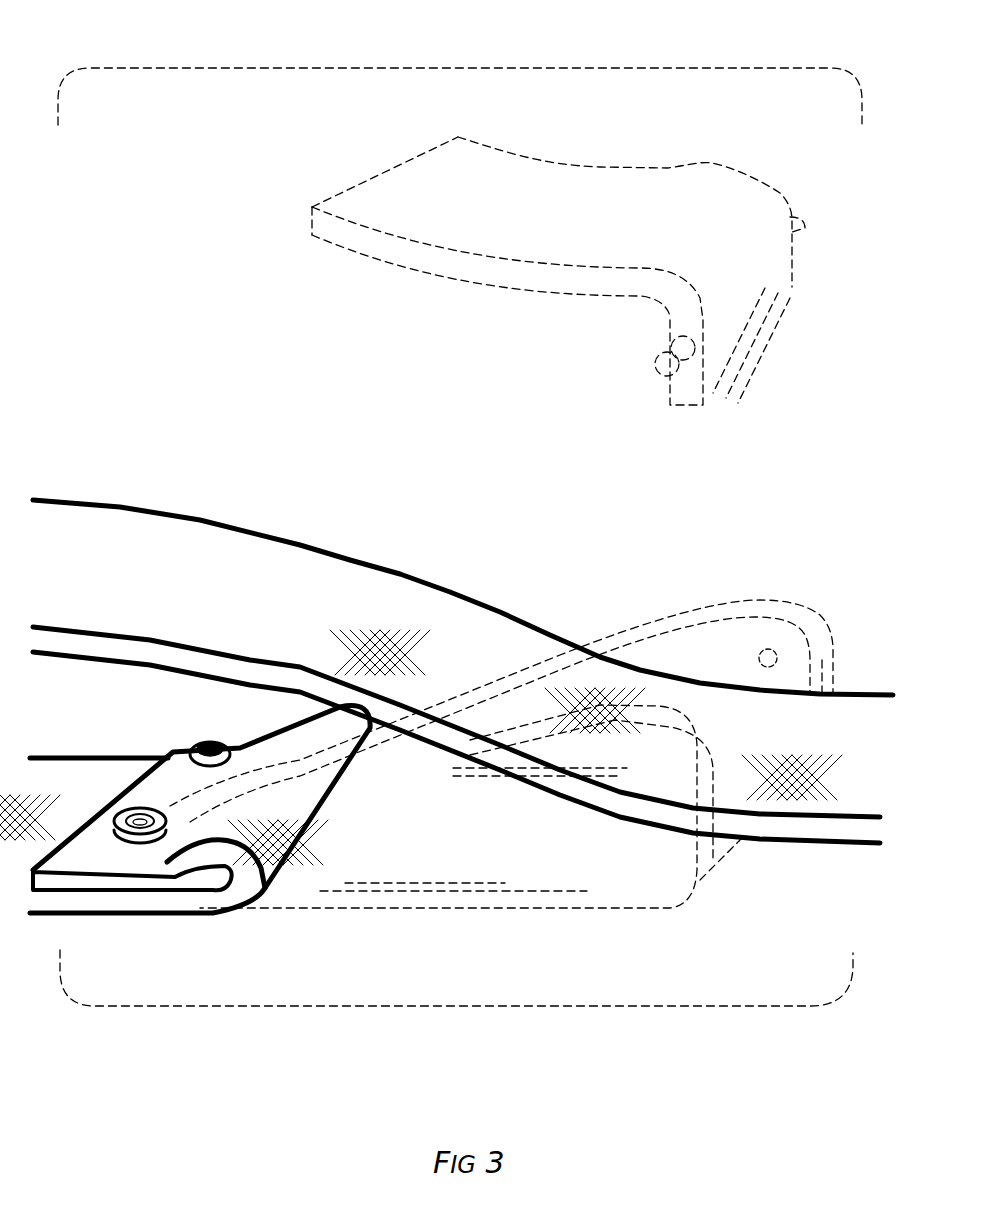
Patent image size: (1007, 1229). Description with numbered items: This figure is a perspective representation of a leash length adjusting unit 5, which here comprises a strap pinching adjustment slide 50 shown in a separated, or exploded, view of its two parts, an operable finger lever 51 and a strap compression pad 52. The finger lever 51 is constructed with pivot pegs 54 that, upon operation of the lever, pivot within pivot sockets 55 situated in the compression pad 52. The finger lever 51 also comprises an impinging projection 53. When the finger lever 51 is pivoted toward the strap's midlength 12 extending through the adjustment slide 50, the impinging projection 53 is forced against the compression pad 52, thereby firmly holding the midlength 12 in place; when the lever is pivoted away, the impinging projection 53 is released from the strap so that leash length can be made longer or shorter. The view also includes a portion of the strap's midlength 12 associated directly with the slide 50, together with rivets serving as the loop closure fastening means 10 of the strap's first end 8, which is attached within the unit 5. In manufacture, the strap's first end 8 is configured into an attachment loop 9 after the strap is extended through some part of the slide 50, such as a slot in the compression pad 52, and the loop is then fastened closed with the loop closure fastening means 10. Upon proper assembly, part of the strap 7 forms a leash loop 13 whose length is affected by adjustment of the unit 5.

The leash length adjusting unit 5 is at (460, 575).
The strap pinching adjustment slide 50 is at (272, 66).
The finger lever 51 is at (536, 215).
The compression pad 52 is at (587, 852).
The impinging projection 53 is at (697, 407).
The pivot pegs 54 is at (800, 232).
The pivot sockets 55 is at (765, 650).
The leash strap 7 is at (461, 738).
The strap's midlength 12 is at (48, 513).
The leash loop 13 is at (60, 697).
The strap's first end 8 is at (55, 885).
The attachment loop 9 is at (230, 875).
The loop closure fastening means 10 is at (145, 847).